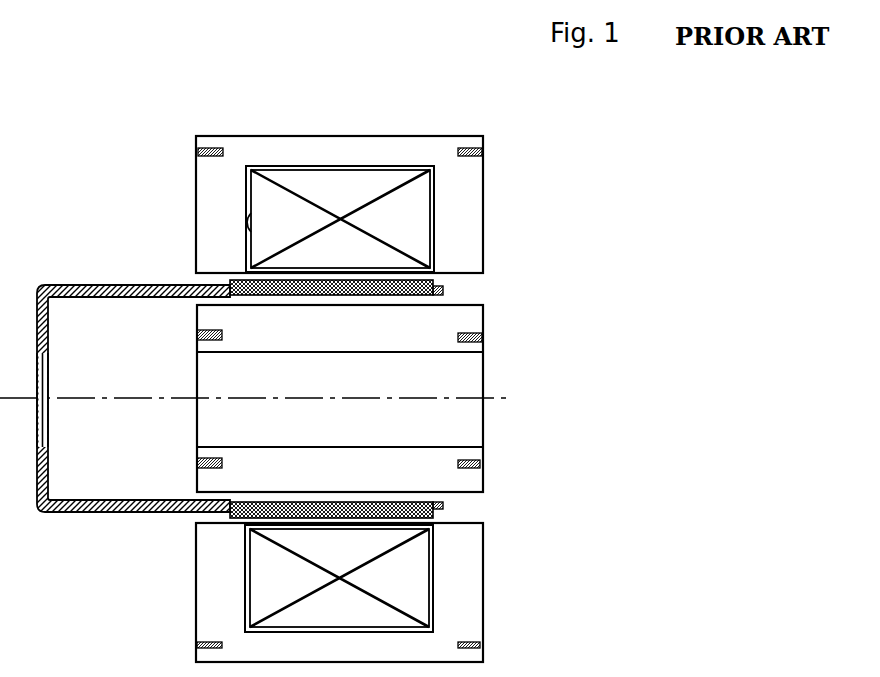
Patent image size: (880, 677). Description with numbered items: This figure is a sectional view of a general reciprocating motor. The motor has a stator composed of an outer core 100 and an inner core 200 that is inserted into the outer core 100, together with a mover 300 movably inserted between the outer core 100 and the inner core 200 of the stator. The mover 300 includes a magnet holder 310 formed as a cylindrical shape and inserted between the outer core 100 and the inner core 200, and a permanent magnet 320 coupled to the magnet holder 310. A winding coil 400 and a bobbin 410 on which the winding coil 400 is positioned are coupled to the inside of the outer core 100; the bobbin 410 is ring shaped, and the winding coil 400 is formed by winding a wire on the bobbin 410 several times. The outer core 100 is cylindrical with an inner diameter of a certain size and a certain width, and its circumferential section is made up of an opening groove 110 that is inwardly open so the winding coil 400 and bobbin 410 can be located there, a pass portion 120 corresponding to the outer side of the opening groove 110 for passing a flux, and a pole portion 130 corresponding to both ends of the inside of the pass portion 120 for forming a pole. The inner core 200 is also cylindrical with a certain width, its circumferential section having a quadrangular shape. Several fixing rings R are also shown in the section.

The outer core 100 is at (342, 173).
The opening groove 110 is at (247, 237).
The pass portion 120 is at (243, 142).
The pole portion 130 is at (220, 273).
The inner core 200 is at (497, 321).
The mover 300 is at (468, 508).
The magnet holder 310 is at (441, 288).
The permanent magnet 320 is at (377, 282).
The winding coil 400 is at (292, 182).
The bobbin 410 is at (342, 165).
The fixing ring R is at (200, 152).